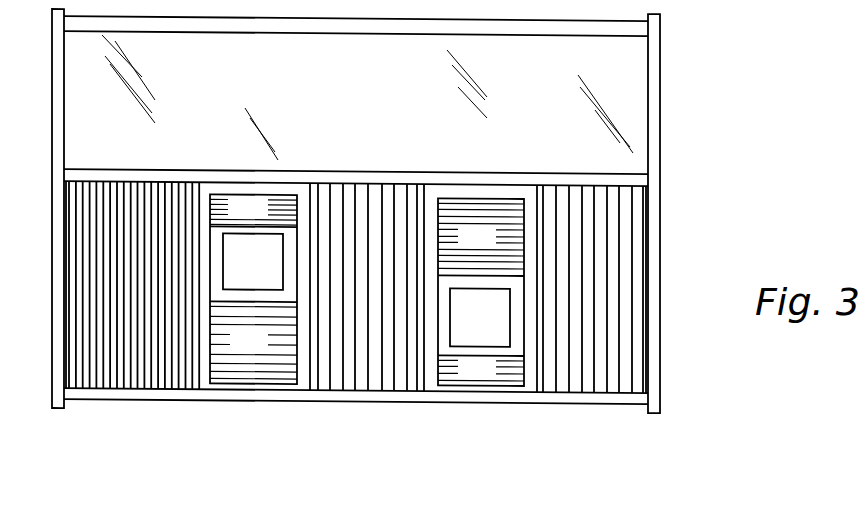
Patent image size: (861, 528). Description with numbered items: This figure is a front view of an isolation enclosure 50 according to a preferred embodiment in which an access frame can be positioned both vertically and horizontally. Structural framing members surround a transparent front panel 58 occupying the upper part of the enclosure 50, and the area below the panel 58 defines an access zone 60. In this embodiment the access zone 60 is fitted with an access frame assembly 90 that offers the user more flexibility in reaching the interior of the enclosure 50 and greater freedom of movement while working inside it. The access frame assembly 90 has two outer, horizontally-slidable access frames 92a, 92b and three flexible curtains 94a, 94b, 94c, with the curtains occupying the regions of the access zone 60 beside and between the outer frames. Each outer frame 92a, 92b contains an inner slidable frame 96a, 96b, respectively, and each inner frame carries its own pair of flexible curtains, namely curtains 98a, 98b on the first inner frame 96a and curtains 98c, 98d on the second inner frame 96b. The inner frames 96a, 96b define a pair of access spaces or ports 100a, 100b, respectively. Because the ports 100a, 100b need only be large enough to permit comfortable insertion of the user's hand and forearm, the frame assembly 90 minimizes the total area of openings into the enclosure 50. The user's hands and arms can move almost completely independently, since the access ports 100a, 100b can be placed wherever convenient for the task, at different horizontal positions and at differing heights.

The enclosure 50 is at (679, 104).
The transparent front panel 58 is at (360, 104).
The access zone 60 is at (363, 391).
The access frame assembly 90 is at (112, 389).
The outer horizontally-slidable access frame 92a is at (278, 389).
The outer horizontally-slidable access frame 92b is at (490, 394).
The flexible curtain 94a is at (145, 292).
The flexible curtain 94b is at (372, 294).
The flexible curtain 94c is at (600, 296).
The inner slidable frame 96a is at (233, 302).
The inner slidable frame 96b is at (438, 329).
The flexible curtain 98a is at (265, 215).
The flexible curtain 98b is at (266, 347).
The flexible curtain 98c is at (494, 244).
The flexible curtain 98d is at (494, 374).
The access port 100a is at (272, 268).
The access port 100b is at (497, 325).